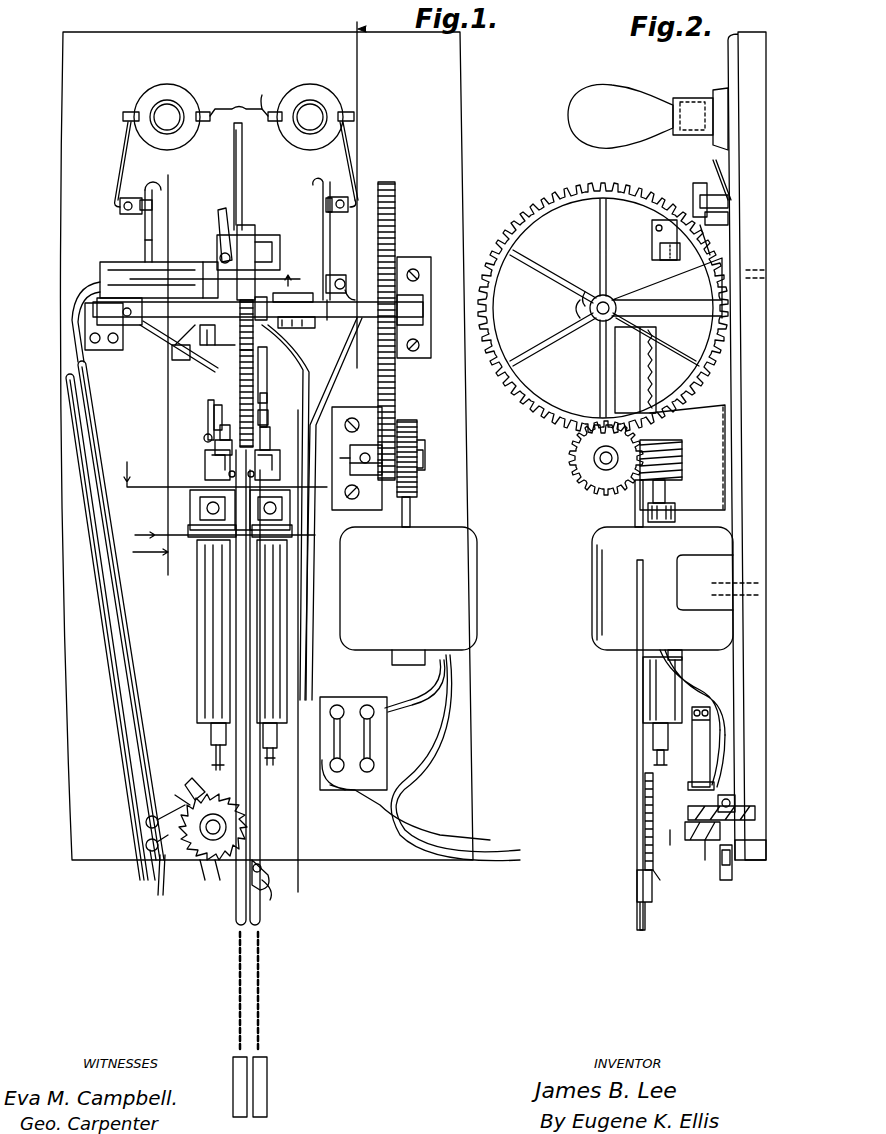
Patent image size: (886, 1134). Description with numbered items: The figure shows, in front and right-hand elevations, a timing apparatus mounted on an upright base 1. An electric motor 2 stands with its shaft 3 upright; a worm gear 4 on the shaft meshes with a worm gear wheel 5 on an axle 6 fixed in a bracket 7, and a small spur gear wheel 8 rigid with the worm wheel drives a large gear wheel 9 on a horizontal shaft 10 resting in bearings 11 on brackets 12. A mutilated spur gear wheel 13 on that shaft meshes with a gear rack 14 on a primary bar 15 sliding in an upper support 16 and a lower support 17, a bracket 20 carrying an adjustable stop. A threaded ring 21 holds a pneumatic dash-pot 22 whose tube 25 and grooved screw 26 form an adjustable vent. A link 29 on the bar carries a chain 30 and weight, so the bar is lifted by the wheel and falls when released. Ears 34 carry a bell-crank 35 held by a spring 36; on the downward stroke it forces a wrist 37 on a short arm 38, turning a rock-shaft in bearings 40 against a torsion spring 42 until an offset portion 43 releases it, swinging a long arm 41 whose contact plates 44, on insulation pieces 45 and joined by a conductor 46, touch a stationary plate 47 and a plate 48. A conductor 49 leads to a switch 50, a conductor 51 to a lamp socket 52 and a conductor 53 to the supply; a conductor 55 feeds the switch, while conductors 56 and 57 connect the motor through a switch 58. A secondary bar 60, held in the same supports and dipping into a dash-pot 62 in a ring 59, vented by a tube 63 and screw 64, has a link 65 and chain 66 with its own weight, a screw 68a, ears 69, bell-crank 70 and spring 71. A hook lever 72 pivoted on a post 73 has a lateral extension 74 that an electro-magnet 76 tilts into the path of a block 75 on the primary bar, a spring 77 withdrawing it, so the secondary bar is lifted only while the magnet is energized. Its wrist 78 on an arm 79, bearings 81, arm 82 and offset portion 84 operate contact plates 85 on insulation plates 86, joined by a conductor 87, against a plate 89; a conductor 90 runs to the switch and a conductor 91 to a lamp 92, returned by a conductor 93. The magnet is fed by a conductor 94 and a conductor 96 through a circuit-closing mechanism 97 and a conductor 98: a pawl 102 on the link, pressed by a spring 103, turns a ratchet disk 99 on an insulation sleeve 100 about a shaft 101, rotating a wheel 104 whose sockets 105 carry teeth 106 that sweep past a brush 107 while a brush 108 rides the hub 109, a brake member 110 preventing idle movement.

In FIG. 1, the upright base 1 is at (72, 632).
In FIG. 2, the upright base 1 is at (757, 131).
In FIG. 1, the electric motor 2 is at (478, 619).
In FIG. 2, the electric motor 2 is at (718, 623).
In FIG. 1, the motor shaft 3 is at (411, 508).
In FIG. 2, the motor shaft 3 is at (653, 500).
In FIG. 2, the worm gear 4 is at (683, 462).
In FIG. 1, the worm gear wheel 5 is at (417, 440).
In FIG. 2, the worm gear wheel 5 is at (573, 478).
In FIG. 1, the axle 6 is at (460, 466).
In FIG. 2, the axle 6 is at (593, 457).
In FIG. 1, the bracket or arm 7 is at (355, 518).
In FIG. 2, the bracket or arm 7 is at (713, 437).
In FIG. 1, the small spur gear wheel 8 is at (462, 490).
In FIG. 1, the large gear wheel 9 is at (424, 387).
In FIG. 2, the large gear wheel 9 is at (562, 418).
In FIG. 1, the horizontal shaft 10 is at (357, 318).
In FIG. 2, the horizontal shaft 10 is at (596, 310).
In FIG. 1, the bearings 11 is at (97, 310).
In FIG. 2, the bearings 11 is at (592, 330).
In FIG. 1, the arms or brackets 12 is at (88, 335).
In FIG. 2, the arms or brackets 12 is at (718, 371).
In FIG. 1, the mutilated spur gear wheel 13 is at (240, 332).
In FIG. 2, the mutilated spur gear wheel 13 is at (566, 305).
In FIG. 1, the gear rack 14 is at (240, 372).
In FIG. 2, the gear rack 14 is at (646, 375).
In FIG. 1, the primary bar 15 is at (250, 230).
In FIG. 2, the primary bar 15 is at (650, 235).
In FIG. 1, the upper support 16 is at (260, 250).
In FIG. 2, the upper support 16 is at (660, 250).
In FIG. 1, the lower support 17 is at (268, 498).
In FIG. 2, the lower support 17 is at (676, 513).
In FIG. 1, the bracket 20 is at (206, 466).
In FIG. 1, the ring 21 is at (270, 537).
In FIG. 1, the pneumatic dash-pot 22 is at (283, 752).
In FIG. 2, the pneumatic dash-pot 22 is at (655, 692).
In FIG. 1, the tube 25 is at (274, 778).
In FIG. 2, the tube 25 is at (653, 735).
In FIG. 1, the screw 26 is at (270, 800).
In FIG. 2, the screw 26 is at (657, 758).
In FIG. 1, the link 29 is at (246, 640).
In FIG. 2, the link 29 is at (637, 805).
In FIG. 1, the chain 30 is at (259, 1021).
In FIG. 1, the ears 34 is at (264, 428).
In FIG. 1, the bell-crank 35 is at (268, 400).
In FIG. 1, the contracting coiled spring 36 is at (262, 418).
In FIG. 1, the wrist 37 is at (284, 350).
In FIG. 1, the short arm 38 is at (283, 329).
In FIG. 1, the bearings 40 is at (306, 329).
In FIG. 1, the long rigid arm 41 is at (323, 262).
In FIG. 2, the long rigid arm 41 is at (693, 190).
In FIG. 1, the torsion spring 42 is at (285, 293).
In FIG. 1, the offset portion 43 is at (274, 375).
In FIG. 1, the contact plates 44 is at (326, 205).
In FIG. 2, the contact plates 44 is at (716, 180).
In FIG. 1, the insulation pieces 45 is at (334, 193).
In FIG. 1, the conductor 46 is at (331, 240).
In FIG. 1, the stationary contact plate or finger 47 is at (346, 290).
In FIG. 1, the contact plate 48 is at (349, 203).
In FIG. 2, the contact plate 48 is at (722, 218).
In FIG. 1, the conductor 49 is at (353, 302).
In FIG. 1, the switch 50 is at (342, 700).
In FIG. 1, the conductor 51 is at (341, 194).
In FIG. 2, the conductor 51 is at (722, 182).
In FIG. 1, the incandescent lamp socket 52 is at (341, 100).
In FIG. 2, the incandescent lamp socket 52 is at (712, 93).
In FIG. 1, the conductor 53 is at (272, 94).
In FIG. 1, the conductor 55 is at (395, 862).
In FIG. 1, the conductor 56 is at (462, 762).
In FIG. 2, the conductor 56 is at (735, 728).
In FIG. 1, the conductor 57 is at (413, 708).
In FIG. 2, the conductor 57 is at (705, 668).
In FIG. 1, the switch 58 is at (375, 750).
In FIG. 2, the switch 58 is at (695, 760).
In FIG. 1, the ring 59 is at (188, 530).
In FIG. 1, the secondary bar 60 is at (226, 452).
In FIG. 1, the dash-pot 62 is at (205, 625).
In FIG. 1, the tube 63 is at (212, 744).
In FIG. 1, the channeled vent screw 64 is at (212, 768).
In FIG. 1, the link 65 is at (236, 906).
In FIG. 1, the chain 66 is at (238, 981).
In FIG. 1, the screw 68a is at (204, 438).
In FIG. 1, the ears 69 is at (220, 432).
In FIG. 1, the bell-crank 70 is at (208, 416).
In FIG. 1, the contracting coiled spring 71 is at (214, 424).
In FIG. 1, the hook lever 72 is at (220, 214).
In FIG. 1, the screw or post 73 is at (220, 258).
In FIG. 1, the slanting lateral extension 74 is at (238, 215).
In FIG. 1, the block 75 is at (244, 222).
In FIG. 1, the electro-magnet 76 is at (118, 268).
In FIG. 1, the contracting coiled spring 77 is at (214, 283).
In FIG. 1, the wrist 78 is at (201, 345).
In FIG. 1, the arm 79 is at (172, 360).
In FIG. 1, the bearings 81 is at (162, 335).
In FIG. 1, the arm 82 is at (153, 225).
In FIG. 1, the offset portion 84 is at (240, 348).
In FIG. 1, the contact plates 85 is at (153, 205).
In FIG. 1, the insulation plates 86 is at (146, 188).
In FIG. 1, the electric conductor 87 is at (145, 232).
In FIG. 1, the contact plate 89 is at (118, 215).
In FIG. 1, the conductor 90 is at (176, 345).
In FIG. 1, the conductor 91 is at (117, 176).
In FIG. 1, the incandescent electric lamp 92 is at (168, 95).
In FIG. 1, the conductor 93 is at (218, 110).
In FIG. 1, the electric conductor 94 is at (138, 878).
In FIG. 1, the electric conductor 96 is at (150, 882).
In FIG. 1, the circuit-closing mechanism 97 is at (202, 857).
In FIG. 1, the conductor 98 is at (88, 362).
In FIG. 1, the ratchet disk 99 is at (214, 862).
In FIG. 2, the ratchet disk 99 is at (656, 882).
In FIG. 2, the insulation sleeve 100 is at (670, 846).
In FIG. 2, the horizontal rigid shaft 101 is at (690, 828).
In FIG. 1, the pawl 102 is at (280, 893).
In FIG. 2, the pawl 102 is at (636, 908).
In FIG. 1, the spring 103 is at (270, 878).
In FIG. 2, the wheel 104 is at (718, 872).
In FIG. 1, the sockets 105 is at (195, 828).
In FIG. 2, the sockets 105 is at (752, 825).
In FIG. 1, the tooth 106 is at (188, 788).
In FIG. 2, the tooth 106 is at (730, 868).
In FIG. 1, the flexible electrode or brush 107 is at (146, 820).
In FIG. 2, the flexible electrode or brush 107 is at (740, 792).
In FIG. 1, the electrode or brush 108 is at (164, 888).
In FIG. 2, the electrode or brush 108 is at (706, 862).
In FIG. 2, the hub 109 is at (696, 842).
In FIG. 1, the yielding brake member 110 is at (182, 790).